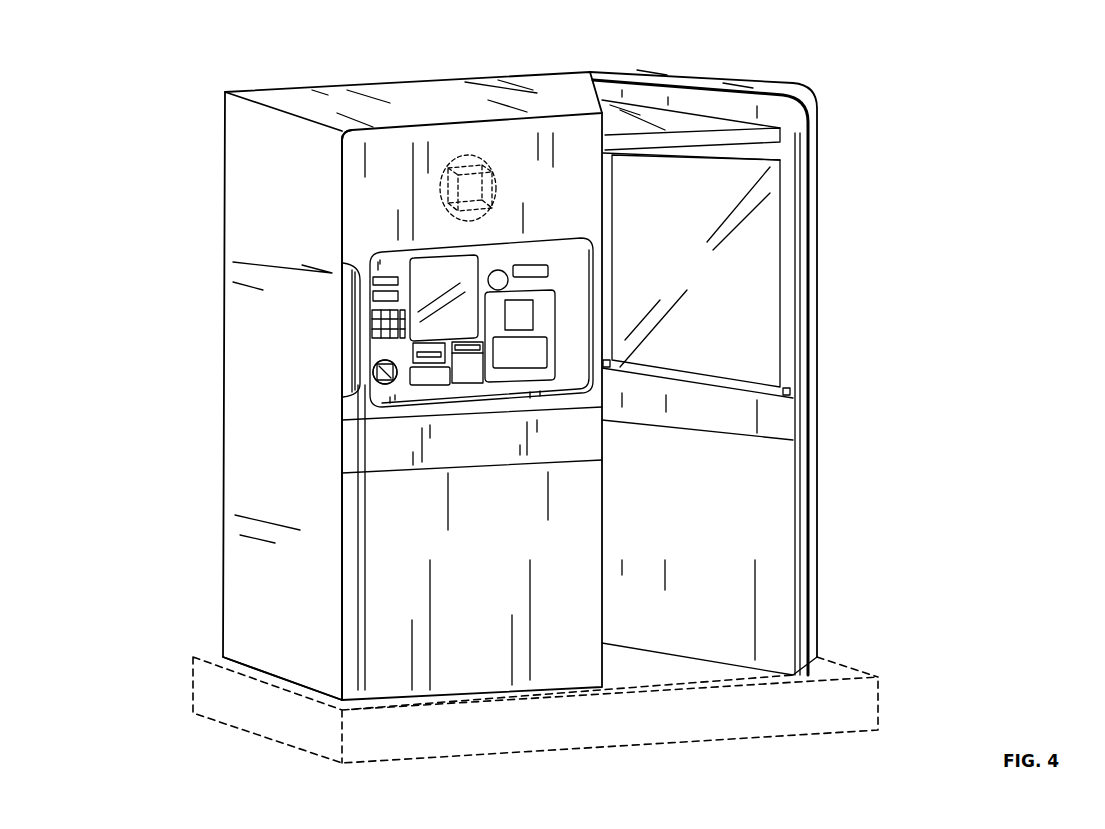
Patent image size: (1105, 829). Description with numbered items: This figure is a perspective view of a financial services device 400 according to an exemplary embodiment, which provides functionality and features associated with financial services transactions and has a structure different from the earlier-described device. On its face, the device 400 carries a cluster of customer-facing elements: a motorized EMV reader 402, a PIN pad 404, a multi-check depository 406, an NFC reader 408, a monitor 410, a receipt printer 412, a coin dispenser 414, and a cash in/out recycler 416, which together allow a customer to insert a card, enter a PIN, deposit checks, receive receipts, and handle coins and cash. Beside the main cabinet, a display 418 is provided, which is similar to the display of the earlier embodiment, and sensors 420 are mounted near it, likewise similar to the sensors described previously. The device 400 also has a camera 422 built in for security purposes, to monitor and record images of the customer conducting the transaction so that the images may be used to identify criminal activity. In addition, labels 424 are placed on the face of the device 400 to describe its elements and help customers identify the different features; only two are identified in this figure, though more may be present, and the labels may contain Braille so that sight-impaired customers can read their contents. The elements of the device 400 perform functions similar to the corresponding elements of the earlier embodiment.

The device 400 is at (535, 396).
The motorized EMV reader 402 is at (372, 295).
The PIN pad 404 is at (373, 320).
The multi-check depository 406 is at (532, 318).
The NFC reader 408 is at (385, 373).
The monitor 410 is at (437, 300).
The receipt printer 412 is at (533, 265).
The coin dispenser 414 is at (465, 365).
The cash in/out recycler 416 is at (430, 375).
The display 418 is at (763, 302).
The sensors 420 is at (612, 358).
The camera 422 is at (503, 270).
The labels 424 is at (373, 290).